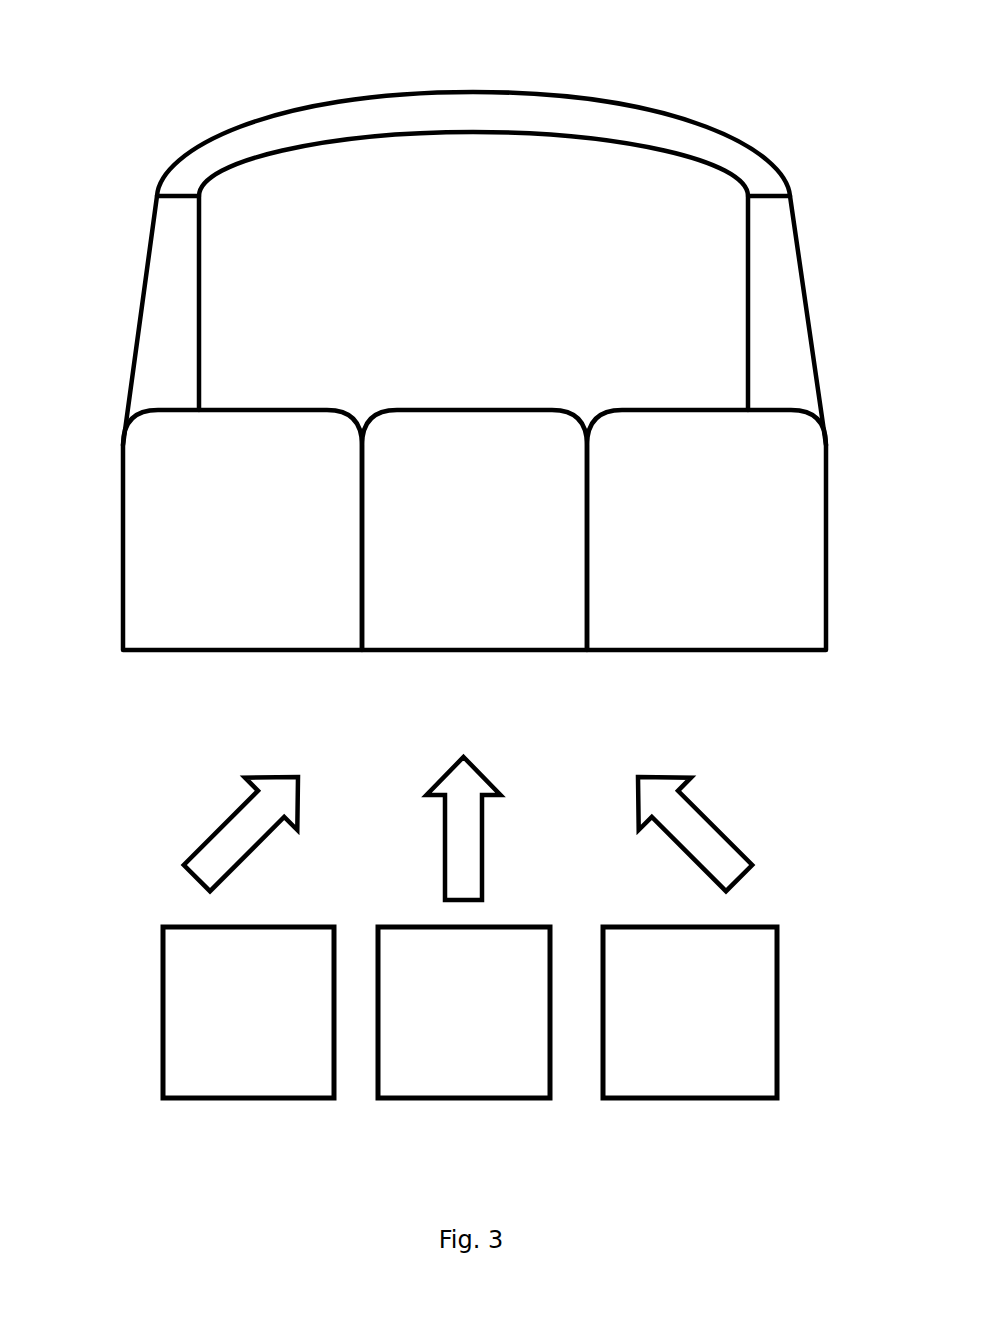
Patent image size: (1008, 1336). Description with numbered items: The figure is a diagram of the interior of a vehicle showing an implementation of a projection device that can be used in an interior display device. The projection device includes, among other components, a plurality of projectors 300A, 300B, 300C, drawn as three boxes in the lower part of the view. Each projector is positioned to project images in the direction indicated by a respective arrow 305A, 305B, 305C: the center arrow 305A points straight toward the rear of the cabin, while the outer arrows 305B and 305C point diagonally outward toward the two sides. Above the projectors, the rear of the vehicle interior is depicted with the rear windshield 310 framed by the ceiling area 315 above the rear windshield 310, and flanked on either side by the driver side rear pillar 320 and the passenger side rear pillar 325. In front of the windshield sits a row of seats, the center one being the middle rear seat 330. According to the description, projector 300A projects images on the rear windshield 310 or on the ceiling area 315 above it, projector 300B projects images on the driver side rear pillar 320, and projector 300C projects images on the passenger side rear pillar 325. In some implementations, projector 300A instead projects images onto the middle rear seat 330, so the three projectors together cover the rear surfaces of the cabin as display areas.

The projector 300A is at (463, 925).
The projector 300B is at (248, 925).
The projector 300C is at (688, 925).
The arrow 305A is at (446, 830).
The arrow 305B is at (230, 818).
The arrow 305C is at (713, 820).
The rear windshield 310 is at (713, 167).
The ceiling area 315 is at (473, 90).
The driver side rear pillar 320 is at (807, 331).
The passenger side rear pillar 325 is at (137, 328).
The middle rear seat 330 is at (475, 408).